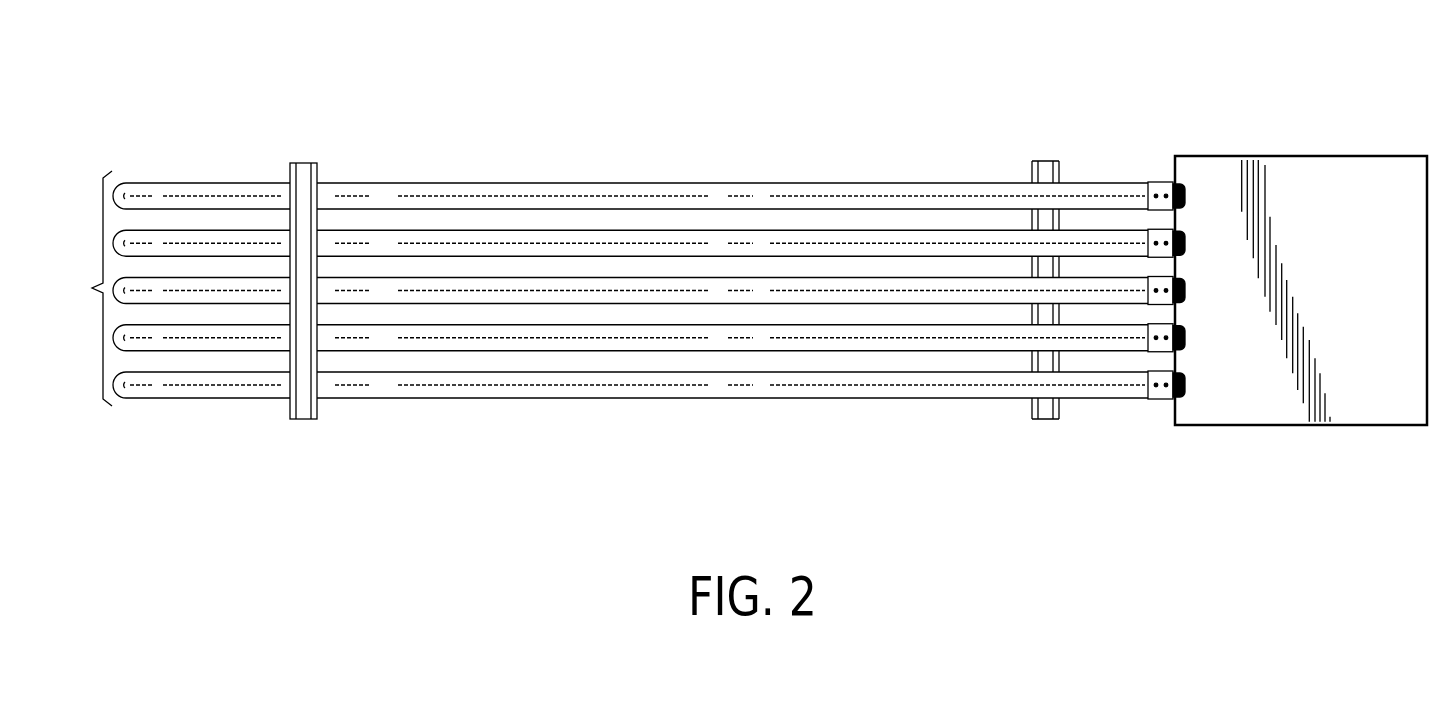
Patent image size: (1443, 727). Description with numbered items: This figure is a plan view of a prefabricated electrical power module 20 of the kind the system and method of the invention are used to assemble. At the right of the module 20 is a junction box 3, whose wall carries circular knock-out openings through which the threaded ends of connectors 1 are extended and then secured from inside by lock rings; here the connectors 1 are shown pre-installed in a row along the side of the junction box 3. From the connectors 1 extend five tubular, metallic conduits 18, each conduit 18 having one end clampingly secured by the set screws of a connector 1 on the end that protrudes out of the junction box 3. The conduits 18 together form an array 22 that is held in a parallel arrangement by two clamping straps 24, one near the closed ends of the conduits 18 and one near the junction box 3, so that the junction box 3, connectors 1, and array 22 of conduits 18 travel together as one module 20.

The connector 1 is at (1157, 180).
The junction box 3 is at (1350, 300).
The conduit 18 is at (600, 287).
The electrical power module 20 is at (457, 90).
The array of conduits 22 is at (602, 290).
The clamping straps 24 is at (303, 175).